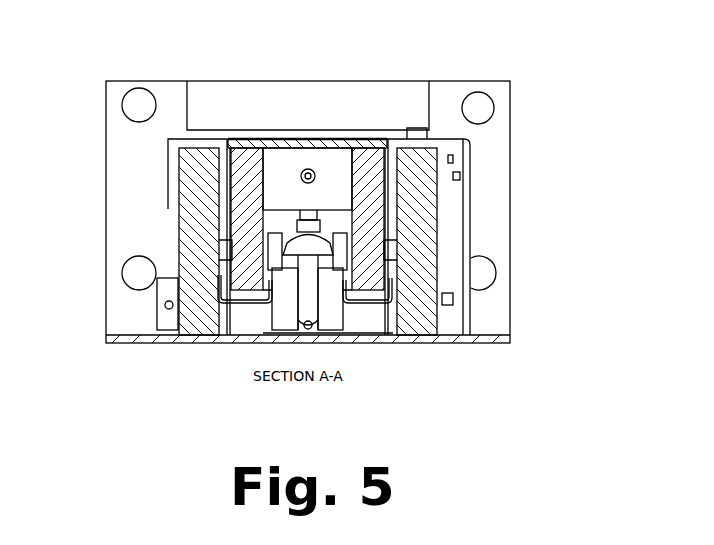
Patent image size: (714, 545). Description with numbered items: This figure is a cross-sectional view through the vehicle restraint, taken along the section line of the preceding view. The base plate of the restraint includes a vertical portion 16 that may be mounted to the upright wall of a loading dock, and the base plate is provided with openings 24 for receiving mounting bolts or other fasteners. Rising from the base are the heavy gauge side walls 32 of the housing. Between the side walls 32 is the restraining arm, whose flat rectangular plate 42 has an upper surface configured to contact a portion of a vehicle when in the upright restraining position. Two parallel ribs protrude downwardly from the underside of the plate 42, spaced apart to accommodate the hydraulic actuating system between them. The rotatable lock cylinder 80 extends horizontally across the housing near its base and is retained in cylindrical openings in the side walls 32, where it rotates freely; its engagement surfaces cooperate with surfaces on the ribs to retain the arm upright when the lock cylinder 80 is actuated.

The vertical portion 16 is at (203, 103).
The openings 24 is at (133, 103).
The side walls 32 is at (190, 243).
The flat rectangular plate 42 is at (237, 142).
The lock cylinder 80 is at (331, 173).